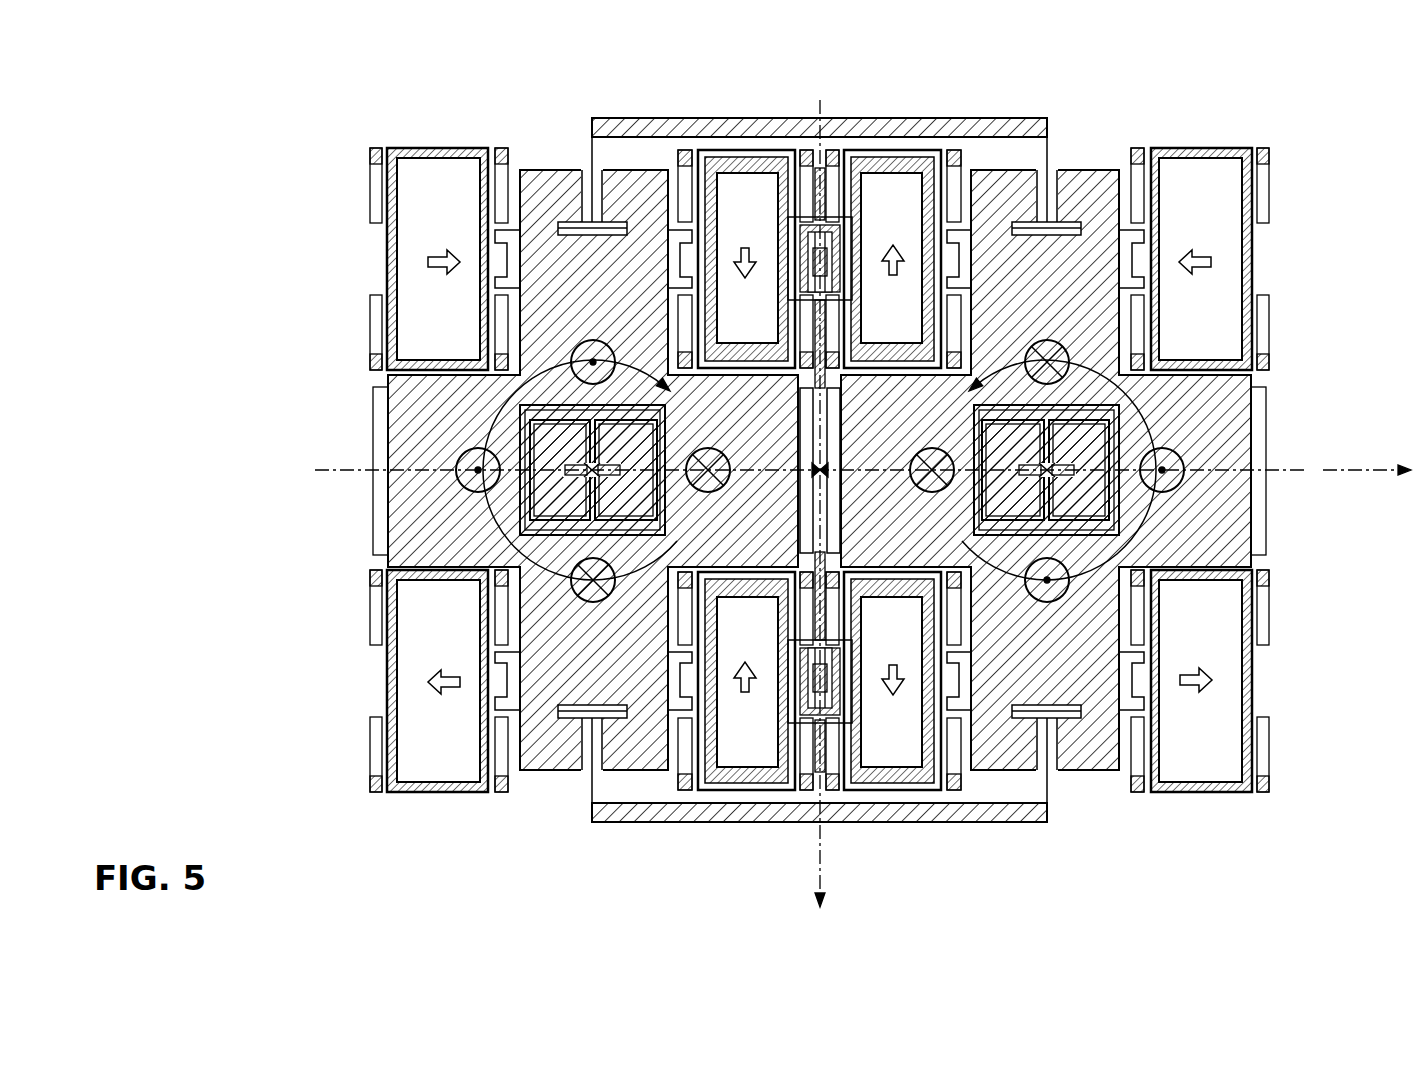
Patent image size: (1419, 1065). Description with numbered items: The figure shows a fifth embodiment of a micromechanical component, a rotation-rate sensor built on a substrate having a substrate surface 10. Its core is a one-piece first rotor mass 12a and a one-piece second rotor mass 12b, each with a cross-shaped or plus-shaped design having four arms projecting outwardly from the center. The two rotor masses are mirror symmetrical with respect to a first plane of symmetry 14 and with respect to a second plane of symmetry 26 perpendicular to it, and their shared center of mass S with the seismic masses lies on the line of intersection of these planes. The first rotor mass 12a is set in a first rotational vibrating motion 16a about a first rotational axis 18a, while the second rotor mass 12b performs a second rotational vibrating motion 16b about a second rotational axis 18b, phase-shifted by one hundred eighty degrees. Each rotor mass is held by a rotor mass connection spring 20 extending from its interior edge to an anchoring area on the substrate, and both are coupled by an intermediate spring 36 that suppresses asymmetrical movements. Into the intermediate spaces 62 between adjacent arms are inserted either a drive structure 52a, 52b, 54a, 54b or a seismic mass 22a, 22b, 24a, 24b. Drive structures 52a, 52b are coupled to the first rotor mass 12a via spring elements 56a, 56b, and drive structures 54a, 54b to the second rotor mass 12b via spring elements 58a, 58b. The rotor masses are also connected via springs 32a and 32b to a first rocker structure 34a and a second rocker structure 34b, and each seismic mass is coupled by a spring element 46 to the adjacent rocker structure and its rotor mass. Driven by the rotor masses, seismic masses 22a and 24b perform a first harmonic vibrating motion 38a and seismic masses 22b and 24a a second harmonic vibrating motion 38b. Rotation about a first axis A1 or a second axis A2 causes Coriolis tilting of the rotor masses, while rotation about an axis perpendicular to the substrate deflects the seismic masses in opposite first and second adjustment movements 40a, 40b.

The substrate surface 10 is at (1391, 327).
The first rotor mass 12a is at (420, 514).
The second rotor mass 12b is at (1257, 533).
The first plane of symmetry 14 is at (1292, 468).
The first rotational vibrating motion 16a is at (520, 432).
The second rotational vibrating motion 16b is at (1119, 432).
The first rotational axis 18a is at (596, 477).
The second rotational axis 18b is at (1043, 477).
The rotor mass connection spring 20 is at (520, 437).
The first seismic mass of the first pair 22a is at (724, 150).
The second seismic mass of the first pair 22b is at (728, 775).
The first seismic mass of the second pair 24a is at (915, 150).
The second seismic mass of the second pair 24b is at (914, 775).
The second plane of symmetry 26 is at (820, 830).
The spring 32a is at (1050, 148).
The second spring 32b is at (590, 785).
The first rocker structure 34a is at (797, 118).
The second rocker structure 34b is at (997, 822).
The intermediate spring 36 is at (835, 416).
The first harmonic vibrating motion 38a is at (428, 258).
The second harmonic vibrating motion 38b is at (1212, 258).
The first adjustment movement 40a is at (745, 250).
The second adjustment movement 40b is at (893, 250).
The spring element 46 is at (969, 230).
The first drive structure of the first pair 52a is at (440, 148).
The second drive structure of the first pair 52b is at (440, 793).
The first drive structure of the second pair 54a is at (1200, 148).
The second drive structure of the second pair 54b is at (1200, 795).
The first spring element 56a is at (513, 232).
The second spring element 56b is at (513, 708).
The first spring element 58a is at (1126, 232).
The second spring element 58b is at (1127, 708).
The intermediate space 62 is at (395, 373).
The center of mass S is at (815, 468).
The first axis A1 is at (1362, 468).
The second axis A2 is at (816, 872).